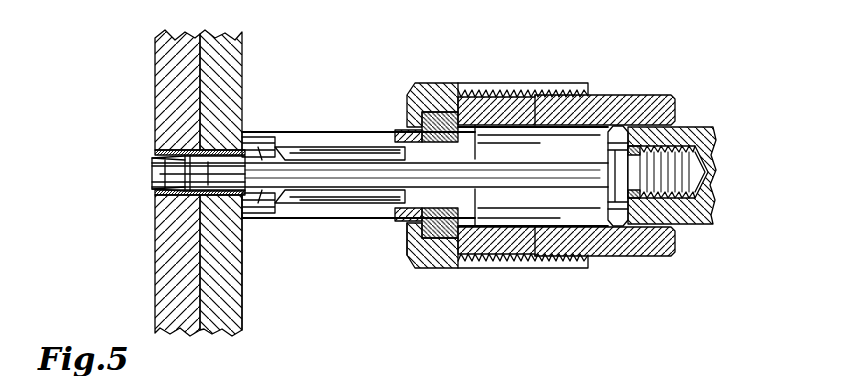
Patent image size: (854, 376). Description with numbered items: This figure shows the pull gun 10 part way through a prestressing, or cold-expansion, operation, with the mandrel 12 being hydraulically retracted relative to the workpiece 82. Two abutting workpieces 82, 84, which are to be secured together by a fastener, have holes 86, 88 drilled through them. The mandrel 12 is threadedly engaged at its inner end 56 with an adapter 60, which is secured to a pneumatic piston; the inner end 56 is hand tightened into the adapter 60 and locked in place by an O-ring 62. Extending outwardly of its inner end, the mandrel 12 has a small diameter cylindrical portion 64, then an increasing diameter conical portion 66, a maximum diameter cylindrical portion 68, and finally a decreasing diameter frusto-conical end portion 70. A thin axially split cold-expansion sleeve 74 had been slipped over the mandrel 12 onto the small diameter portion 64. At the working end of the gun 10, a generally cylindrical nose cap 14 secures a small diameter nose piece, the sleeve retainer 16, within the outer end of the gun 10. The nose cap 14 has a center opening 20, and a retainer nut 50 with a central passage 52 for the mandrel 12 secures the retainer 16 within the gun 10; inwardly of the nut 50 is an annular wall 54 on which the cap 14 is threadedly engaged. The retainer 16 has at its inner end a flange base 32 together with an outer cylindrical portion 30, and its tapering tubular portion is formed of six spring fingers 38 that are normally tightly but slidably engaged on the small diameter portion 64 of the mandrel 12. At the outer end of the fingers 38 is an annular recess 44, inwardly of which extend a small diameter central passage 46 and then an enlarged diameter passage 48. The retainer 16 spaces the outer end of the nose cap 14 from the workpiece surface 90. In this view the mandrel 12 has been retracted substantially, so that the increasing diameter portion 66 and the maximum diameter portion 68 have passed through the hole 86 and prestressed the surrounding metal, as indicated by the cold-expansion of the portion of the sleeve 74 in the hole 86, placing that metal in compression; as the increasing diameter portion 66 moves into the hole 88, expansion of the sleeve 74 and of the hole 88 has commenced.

The pull gun 10 is at (499, 76).
The mandrel 12 is at (337, 175).
The nose cap 14 is at (517, 173).
The sleeve retainer 16 is at (300, 120).
The center opening 20 is at (410, 130).
The cylindrical portion 30 is at (407, 223).
The flange base 32 is at (444, 115).
The spring fingers 38 is at (290, 206).
The annular recess 44 is at (236, 148).
The central passage 46 is at (262, 158).
The enlarged diameter passage 48 is at (322, 207).
The retainer nut 50 is at (514, 97).
The central passage 52 is at (476, 192).
The annular wall 54 is at (627, 104).
The inner end 56 is at (675, 178).
The adapter 60 is at (697, 130).
The O-ring 62 is at (643, 228).
The small diameter cylindrical portion 64 is at (382, 176).
The increasing diameter conical portion 66 is at (158, 265).
The maximum diameter cylindrical portion 68 is at (163, 170).
The frusto-conical end portion 70 is at (162, 172).
The cold-expansion sleeve 74 is at (153, 195).
The workpiece 82 is at (170, 48).
The workpiece 84 is at (220, 40).
The hole 86 is at (176, 200).
The hole 88 is at (244, 218).
The workpiece surface 90 is at (243, 311).